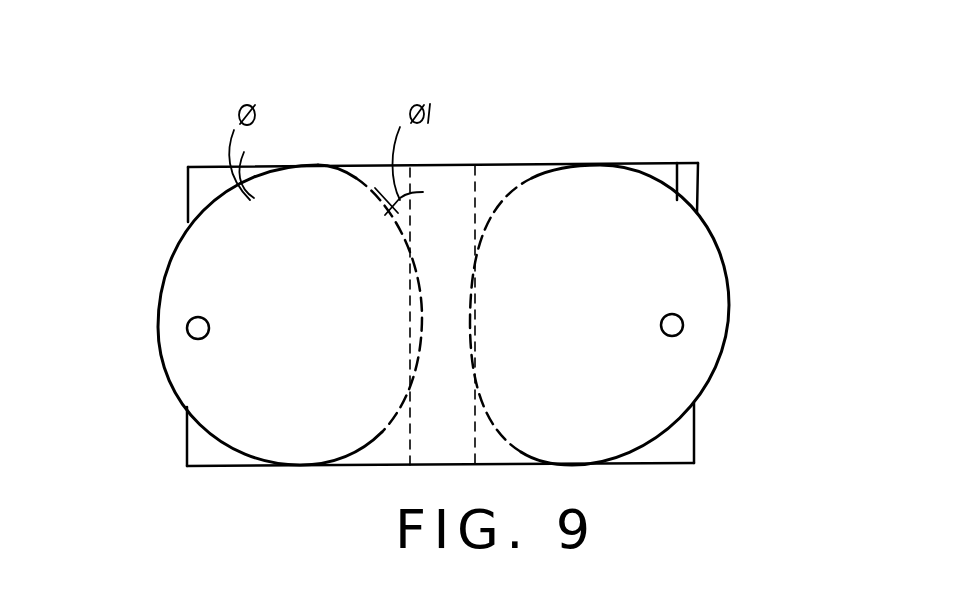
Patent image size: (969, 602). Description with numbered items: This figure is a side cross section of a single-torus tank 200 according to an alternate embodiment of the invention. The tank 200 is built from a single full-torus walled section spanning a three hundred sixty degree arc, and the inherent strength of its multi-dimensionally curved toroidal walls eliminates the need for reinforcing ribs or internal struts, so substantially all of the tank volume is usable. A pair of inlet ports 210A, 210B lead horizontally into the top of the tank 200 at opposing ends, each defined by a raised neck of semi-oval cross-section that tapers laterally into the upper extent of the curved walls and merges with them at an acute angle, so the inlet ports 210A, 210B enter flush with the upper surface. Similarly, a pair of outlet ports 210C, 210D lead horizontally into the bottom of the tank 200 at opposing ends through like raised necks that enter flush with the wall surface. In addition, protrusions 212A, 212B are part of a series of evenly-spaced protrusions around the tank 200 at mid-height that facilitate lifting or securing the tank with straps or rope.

The single-torus tank 200 is at (323, 106).
The inlet port 210A is at (182, 190).
The inlet port 210B is at (698, 207).
The outlet port 210C is at (707, 438).
The outlet port 210D is at (160, 457).
The protrusion 212A is at (186, 328).
The protrusion 212B is at (688, 327).